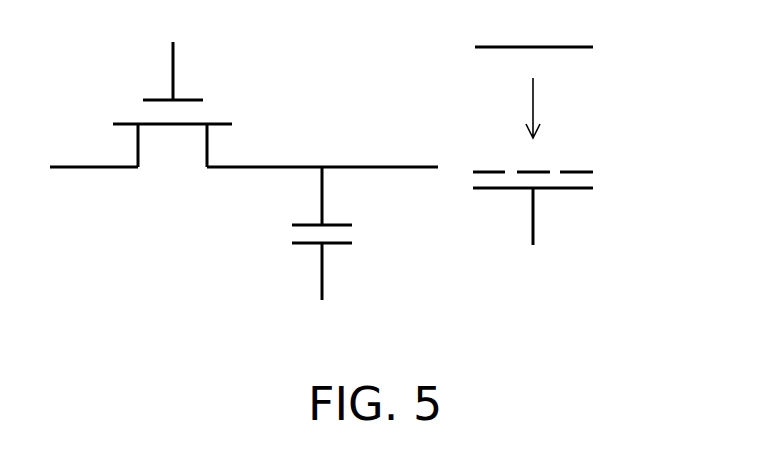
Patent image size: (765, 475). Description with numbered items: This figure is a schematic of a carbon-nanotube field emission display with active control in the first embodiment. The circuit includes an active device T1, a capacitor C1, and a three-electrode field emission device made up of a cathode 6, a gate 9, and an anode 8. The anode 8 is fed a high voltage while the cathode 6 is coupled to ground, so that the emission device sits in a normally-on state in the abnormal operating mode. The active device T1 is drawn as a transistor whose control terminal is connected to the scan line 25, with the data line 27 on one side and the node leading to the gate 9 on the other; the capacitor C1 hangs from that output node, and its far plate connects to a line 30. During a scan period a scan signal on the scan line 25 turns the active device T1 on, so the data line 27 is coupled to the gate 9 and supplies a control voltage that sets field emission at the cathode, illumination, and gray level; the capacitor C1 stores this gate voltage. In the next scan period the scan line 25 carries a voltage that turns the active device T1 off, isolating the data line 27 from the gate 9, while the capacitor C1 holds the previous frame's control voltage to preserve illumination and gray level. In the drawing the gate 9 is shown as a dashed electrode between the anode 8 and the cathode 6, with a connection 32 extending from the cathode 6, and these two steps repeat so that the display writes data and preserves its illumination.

The active device T1 is at (172, 161).
The scan line 25 is at (173, 72).
The data line 27 is at (93, 167).
The capacitor C1 is at (347, 235).
The common electrode line 30 is at (322, 283).
The anode 8 is at (593, 47).
The gate 9 is at (593, 172).
The cathode 6 is at (593, 189).
The pixel electrode connection 32 is at (533, 228).